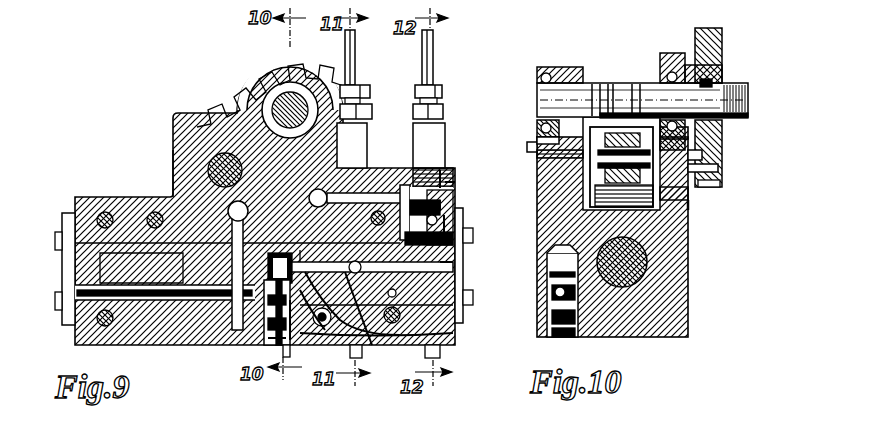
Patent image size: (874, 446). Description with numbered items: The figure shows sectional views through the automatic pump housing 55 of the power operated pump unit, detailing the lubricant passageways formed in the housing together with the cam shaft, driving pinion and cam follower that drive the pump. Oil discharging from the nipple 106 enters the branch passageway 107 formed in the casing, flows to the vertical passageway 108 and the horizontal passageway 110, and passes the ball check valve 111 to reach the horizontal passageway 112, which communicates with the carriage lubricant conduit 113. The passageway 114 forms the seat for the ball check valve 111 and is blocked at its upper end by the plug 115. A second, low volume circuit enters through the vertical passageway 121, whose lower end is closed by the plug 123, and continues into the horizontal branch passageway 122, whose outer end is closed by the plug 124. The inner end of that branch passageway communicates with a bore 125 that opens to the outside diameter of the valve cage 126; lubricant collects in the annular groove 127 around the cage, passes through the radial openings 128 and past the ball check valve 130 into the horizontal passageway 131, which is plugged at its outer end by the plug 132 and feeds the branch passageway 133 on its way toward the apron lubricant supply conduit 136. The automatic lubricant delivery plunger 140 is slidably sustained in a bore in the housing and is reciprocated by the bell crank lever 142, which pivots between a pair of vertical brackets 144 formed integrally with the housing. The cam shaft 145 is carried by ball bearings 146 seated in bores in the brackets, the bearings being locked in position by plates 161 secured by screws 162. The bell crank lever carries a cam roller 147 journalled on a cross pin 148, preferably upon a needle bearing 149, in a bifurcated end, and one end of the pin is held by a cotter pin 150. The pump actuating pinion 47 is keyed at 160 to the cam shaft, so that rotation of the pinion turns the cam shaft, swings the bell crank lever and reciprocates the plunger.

In FIG. 9, the pump actuating pinion 47 is at (228, 70).
In FIG. 10, the pump actuating pinion 47 is at (723, 44).
In FIG. 9, the automatic pump housing 55 is at (162, 183).
In FIG. 10, the automatic pump housing 55 is at (700, 234).
In FIG. 9, the nipple 106 is at (358, 162).
In FIG. 9, the branch passageway 107 is at (332, 165).
In FIG. 9, the vertical passageway 108 is at (462, 204).
In FIG. 9, the horizontal passageway 110 is at (455, 252).
In FIG. 9, the ball check valve 111 is at (466, 222).
In FIG. 9, the horizontal passageway 112 is at (458, 181).
In FIG. 9, the carriage lubricant conduit 113 is at (437, 82).
In FIG. 9, the passageway 114 is at (450, 191).
In FIG. 9, the plug 115 is at (452, 170).
In FIG. 9, the vertical passageway 121 is at (205, 215).
In FIG. 9, the horizontal branch passageway 122 is at (203, 296).
In FIG. 9, the plug 123 is at (232, 340).
In FIG. 9, the plug 124 is at (63, 300).
In FIG. 9, the bore 125 is at (270, 337).
In FIG. 9, the valve cage 126 is at (301, 345).
In FIG. 9, the annular groove 127 is at (326, 348).
In FIG. 9, the radial openings 128 is at (268, 346).
In FIG. 9, the ball check valve 130 is at (376, 350).
In FIG. 9, the horizontal passageway 131 is at (366, 343).
In FIG. 9, the plug 132 is at (463, 264).
In FIG. 9, the branch passageway 133 is at (455, 337).
In FIG. 9, the apron lubricant supply conduit 136 is at (356, 78).
In FIG. 10, the automatic lubricant delivery plunger 140 is at (650, 266).
In FIG. 10, the bell crank lever 142 is at (688, 207).
In FIG. 10, the vertical brackets 144 is at (545, 180).
In FIG. 9, the cam shaft 145 is at (282, 110).
In FIG. 10, the cam shaft 145 is at (748, 117).
In FIG. 10, the ball bearings 146 is at (535, 80).
In FIG. 10, the cam roller 147 is at (637, 114).
In FIG. 10, the cross pin 148 is at (617, 200).
In FIG. 10, the needle bearing 149 is at (611, 113).
In FIG. 10, the cotter pin 150 is at (593, 113).
In FIG. 10, the key 160 is at (708, 80).
In FIG. 10, the plates 161 is at (535, 128).
In FIG. 10, the screws 162 is at (532, 147).